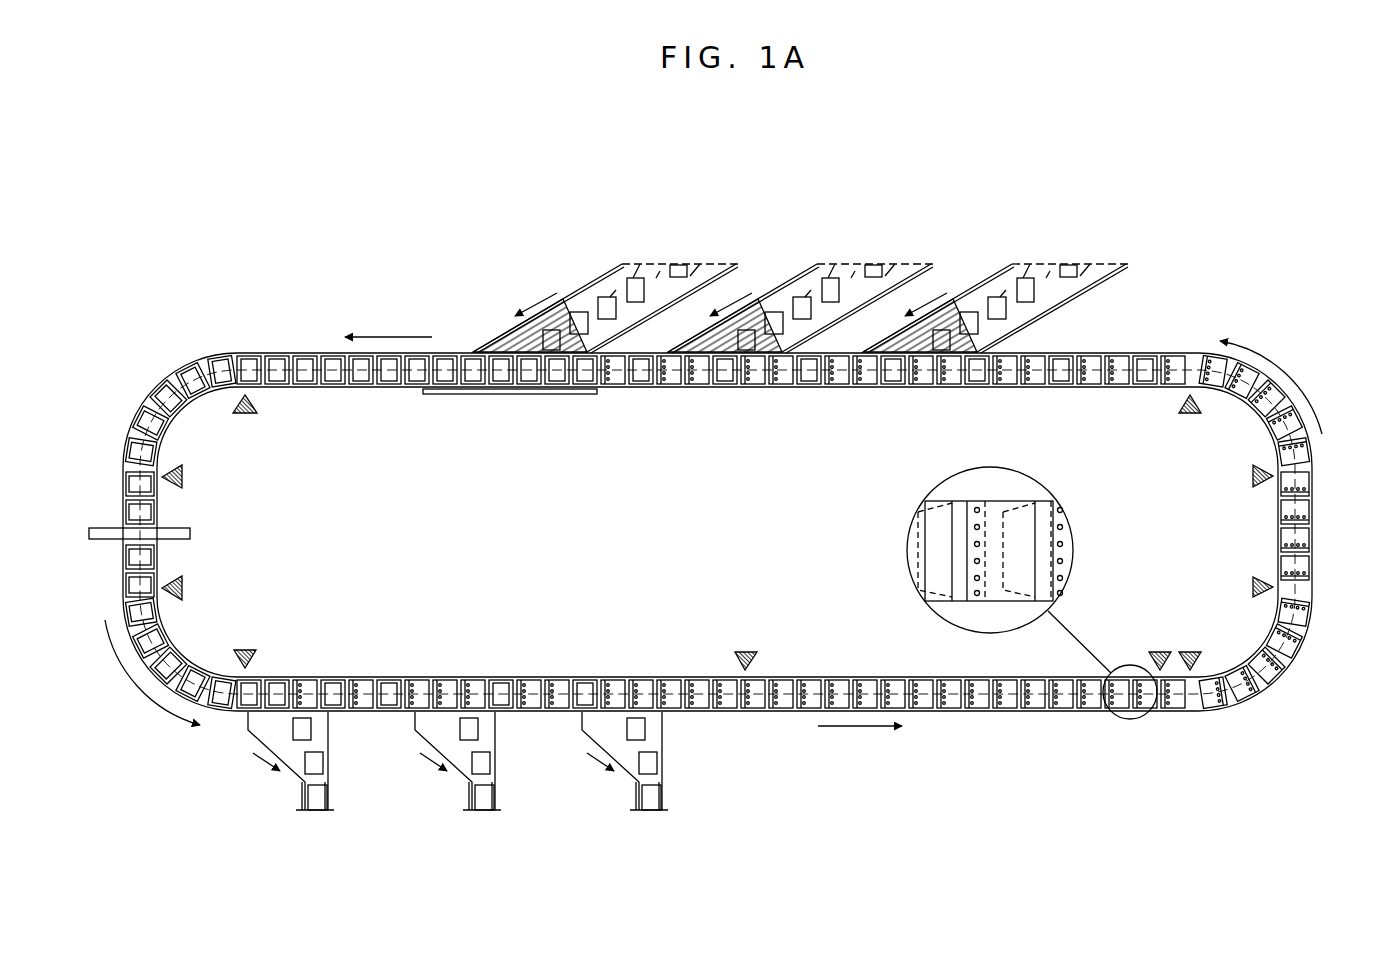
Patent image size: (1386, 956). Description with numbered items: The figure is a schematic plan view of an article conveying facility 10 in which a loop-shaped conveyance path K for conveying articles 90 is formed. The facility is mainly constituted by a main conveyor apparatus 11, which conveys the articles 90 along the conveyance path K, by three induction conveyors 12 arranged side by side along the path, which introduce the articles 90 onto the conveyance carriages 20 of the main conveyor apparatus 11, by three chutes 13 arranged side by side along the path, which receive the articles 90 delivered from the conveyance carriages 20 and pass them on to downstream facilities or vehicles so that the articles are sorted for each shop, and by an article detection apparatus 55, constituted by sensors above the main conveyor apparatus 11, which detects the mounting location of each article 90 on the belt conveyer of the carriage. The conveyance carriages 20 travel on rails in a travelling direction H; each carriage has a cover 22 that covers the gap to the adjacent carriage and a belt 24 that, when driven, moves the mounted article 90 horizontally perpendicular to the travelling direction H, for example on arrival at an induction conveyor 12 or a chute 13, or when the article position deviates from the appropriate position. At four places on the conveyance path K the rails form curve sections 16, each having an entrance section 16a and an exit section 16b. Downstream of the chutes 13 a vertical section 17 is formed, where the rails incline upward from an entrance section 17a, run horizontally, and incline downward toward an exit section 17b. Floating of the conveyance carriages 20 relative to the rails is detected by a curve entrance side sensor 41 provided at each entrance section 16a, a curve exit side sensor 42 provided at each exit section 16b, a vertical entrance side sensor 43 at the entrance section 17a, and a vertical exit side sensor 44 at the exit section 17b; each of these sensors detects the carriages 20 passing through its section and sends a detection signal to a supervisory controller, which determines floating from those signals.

The article conveying facility 10 is at (178, 335).
The main conveyor apparatus 11 is at (1000, 714).
The induction conveyor 12 is at (578, 286).
The chute 13 is at (290, 782).
The curve section 16 is at (196, 406).
The entrance section of the curve section 16a is at (247, 350).
The exit section of the curve section 16b is at (1196, 350).
The vertical section 17 is at (885, 668).
The entrance section of the vertical section 17a is at (745, 716).
The exit section of the vertical section 17b is at (1160, 714).
The conveyance carriage 20 is at (180, 382).
The cover 22 is at (960, 520).
The belt 24 is at (1012, 600).
The curve entrance side sensor 41 is at (252, 418).
The curve exit side sensor 42 is at (186, 480).
The vertical entrance side sensor 43 is at (743, 650).
The vertical exit side sensor 44 is at (1155, 650).
The article detection apparatus 55 is at (117, 530).
The article 90 is at (612, 315).
The conveyance path K is at (236, 352).
The travelling direction H is at (385, 335).